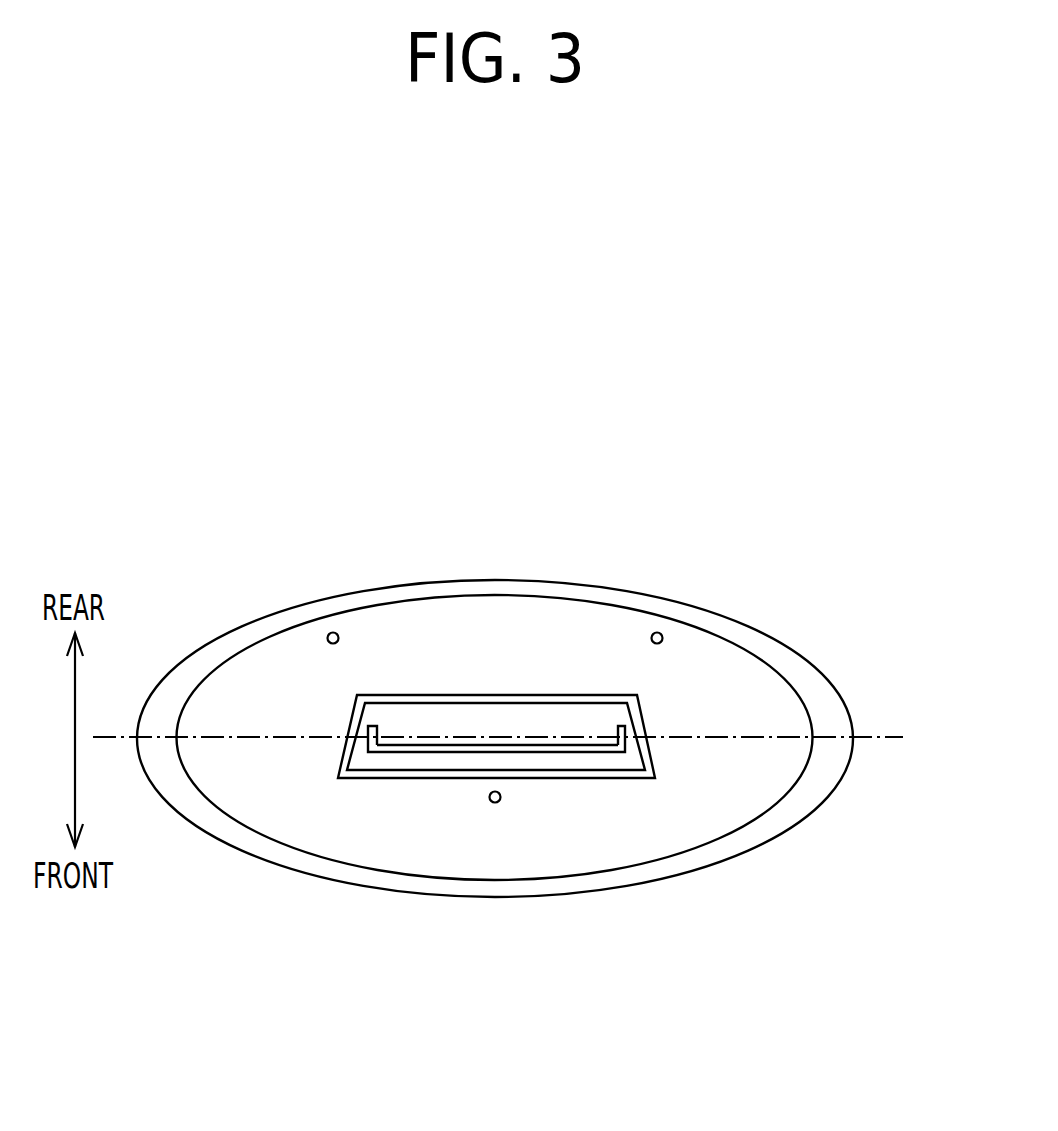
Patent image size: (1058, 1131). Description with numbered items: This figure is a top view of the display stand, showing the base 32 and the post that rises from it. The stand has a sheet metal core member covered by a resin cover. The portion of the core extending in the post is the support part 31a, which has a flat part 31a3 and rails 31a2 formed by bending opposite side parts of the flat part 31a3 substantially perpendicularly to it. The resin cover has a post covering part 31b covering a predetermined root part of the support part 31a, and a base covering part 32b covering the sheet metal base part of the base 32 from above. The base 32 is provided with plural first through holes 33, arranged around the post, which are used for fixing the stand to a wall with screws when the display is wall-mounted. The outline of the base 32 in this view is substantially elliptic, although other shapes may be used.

The support part 31a is at (501, 600).
The rails 31a2 is at (373, 726).
The flat part 31a3 is at (442, 745).
The post covering part 31b is at (487, 695).
The base 32 is at (521, 722).
The base covering part 32b is at (768, 685).
The first through holes 33 is at (329, 633).